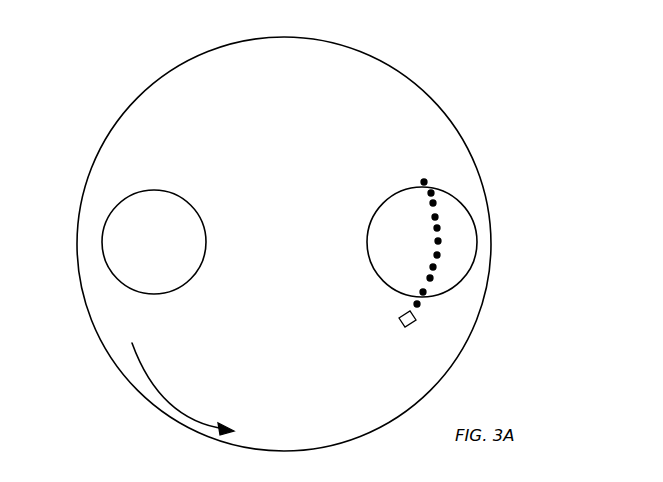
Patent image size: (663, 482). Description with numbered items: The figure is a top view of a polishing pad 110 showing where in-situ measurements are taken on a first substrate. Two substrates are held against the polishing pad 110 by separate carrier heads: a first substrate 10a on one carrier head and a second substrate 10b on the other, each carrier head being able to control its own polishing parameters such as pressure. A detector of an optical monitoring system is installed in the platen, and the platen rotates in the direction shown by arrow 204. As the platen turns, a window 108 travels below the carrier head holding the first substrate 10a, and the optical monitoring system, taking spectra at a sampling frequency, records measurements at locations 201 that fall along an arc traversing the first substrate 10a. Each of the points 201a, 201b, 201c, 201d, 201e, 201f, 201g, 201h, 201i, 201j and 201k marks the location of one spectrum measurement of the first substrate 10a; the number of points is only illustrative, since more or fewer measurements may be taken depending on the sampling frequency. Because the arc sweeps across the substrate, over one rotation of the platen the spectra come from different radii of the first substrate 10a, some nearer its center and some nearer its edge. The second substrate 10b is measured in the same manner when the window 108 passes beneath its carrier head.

The polishing pad 110 is at (302, 436).
The first substrate 10a is at (393, 290).
The second substrate 10b is at (209, 243).
The window 108 is at (416, 322).
The arrow 204 is at (185, 415).
The locations 201 is at (478, 209).
The point 201a is at (490, 316).
The point 201b is at (423, 292).
The point 201c is at (430, 278).
The point 201d is at (433, 267).
The point 201e is at (437, 255).
The point 201f is at (438, 241).
The point 201g is at (437, 228).
The point 201h is at (435, 217).
The point 201i is at (433, 203).
The point 201j is at (431, 193).
The point 201k is at (424, 182).